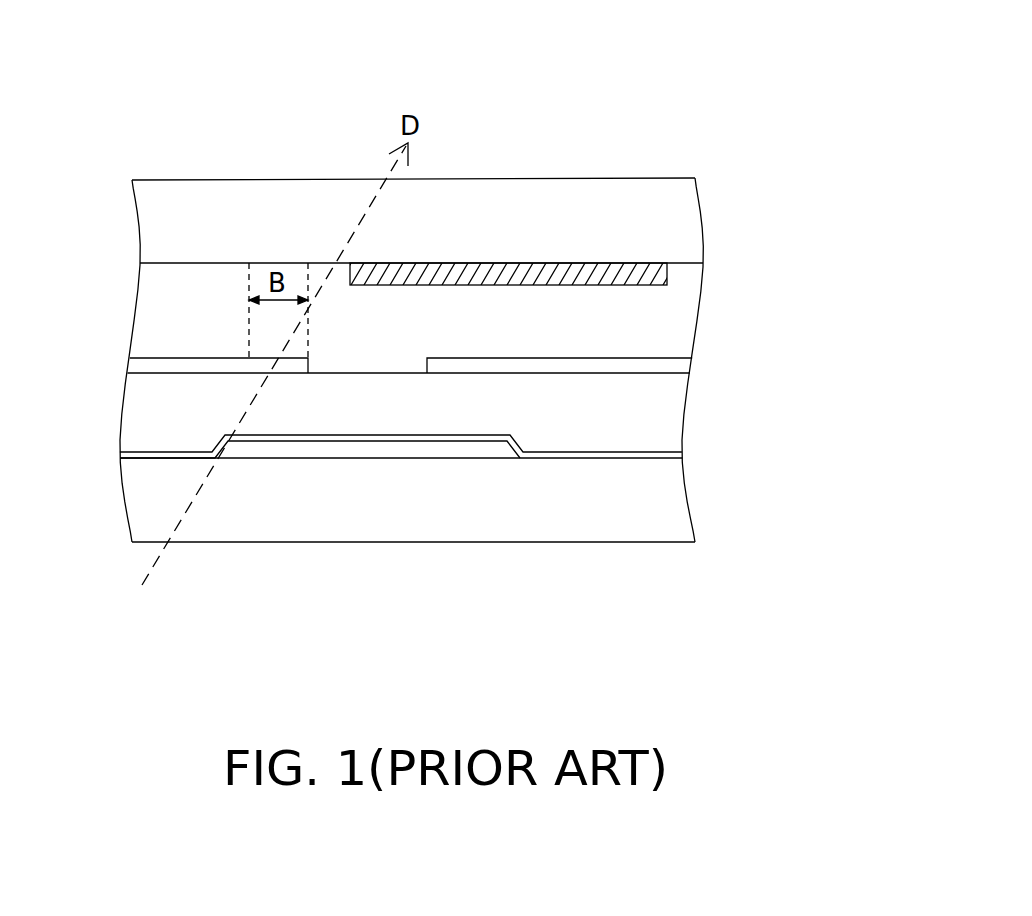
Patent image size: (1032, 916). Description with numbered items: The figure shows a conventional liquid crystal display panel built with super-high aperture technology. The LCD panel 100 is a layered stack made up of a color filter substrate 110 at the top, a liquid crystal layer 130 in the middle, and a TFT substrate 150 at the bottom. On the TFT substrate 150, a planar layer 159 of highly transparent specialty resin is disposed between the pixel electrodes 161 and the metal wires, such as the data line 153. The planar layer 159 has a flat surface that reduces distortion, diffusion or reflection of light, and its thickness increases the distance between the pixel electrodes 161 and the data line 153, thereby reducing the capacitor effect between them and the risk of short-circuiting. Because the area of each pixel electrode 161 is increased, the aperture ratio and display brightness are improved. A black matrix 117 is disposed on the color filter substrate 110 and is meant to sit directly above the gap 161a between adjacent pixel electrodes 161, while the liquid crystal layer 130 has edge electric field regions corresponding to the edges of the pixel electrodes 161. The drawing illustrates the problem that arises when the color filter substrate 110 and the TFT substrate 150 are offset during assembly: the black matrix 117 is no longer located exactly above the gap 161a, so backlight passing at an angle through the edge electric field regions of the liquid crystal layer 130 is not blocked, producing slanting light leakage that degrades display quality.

The LCD panel 100 is at (880, 45).
The color filter substrate 110 is at (826, 177).
The black matrix 117 is at (667, 278).
The liquid crystal layer 130 is at (680, 328).
The TFT substrate 150 is at (826, 355).
The data line 153 is at (452, 461).
The planar layer 159 is at (682, 413).
The pixel electrode 161 is at (684, 363).
The gap 161a is at (387, 351).